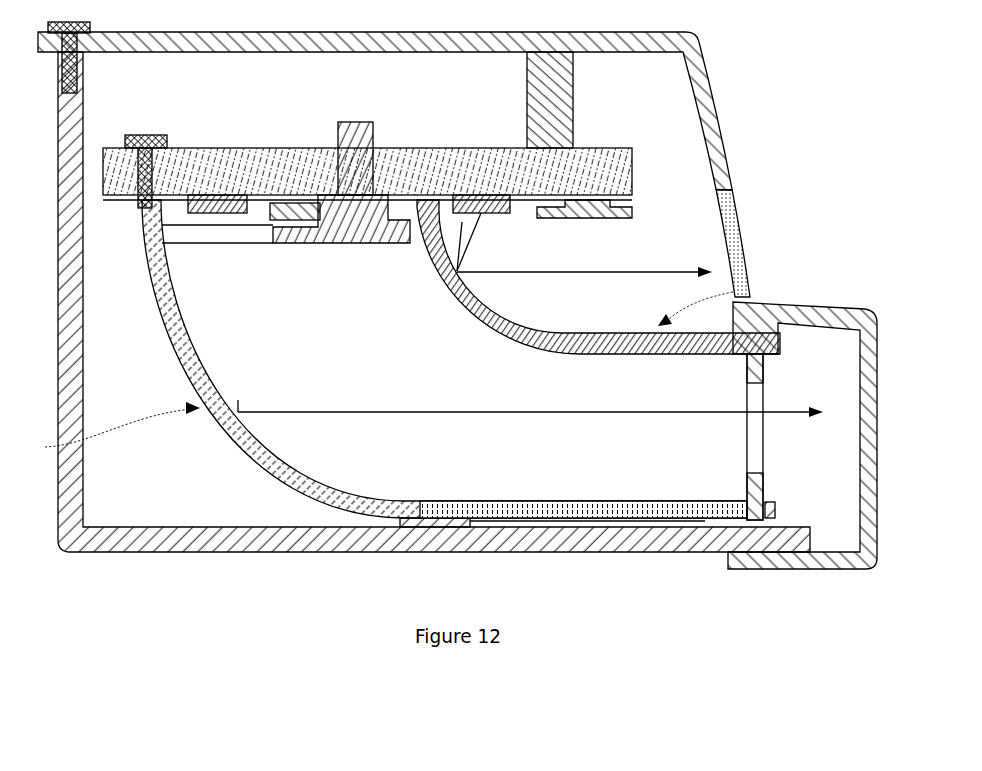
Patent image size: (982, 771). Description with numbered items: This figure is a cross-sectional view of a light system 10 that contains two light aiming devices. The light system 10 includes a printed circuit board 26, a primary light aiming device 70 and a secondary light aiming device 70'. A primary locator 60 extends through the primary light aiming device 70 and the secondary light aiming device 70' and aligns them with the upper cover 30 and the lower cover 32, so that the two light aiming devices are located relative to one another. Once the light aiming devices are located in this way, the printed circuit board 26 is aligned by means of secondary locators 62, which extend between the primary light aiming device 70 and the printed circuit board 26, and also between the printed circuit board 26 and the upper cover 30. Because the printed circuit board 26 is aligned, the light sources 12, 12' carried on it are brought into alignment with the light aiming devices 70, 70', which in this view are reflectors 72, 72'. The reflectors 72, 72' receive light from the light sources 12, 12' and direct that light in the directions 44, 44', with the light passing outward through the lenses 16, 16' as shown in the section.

The light system 10 is at (786, 128).
The lens 16 is at (424, 292).
The lens 16' is at (825, 435).
The upper cover 30 is at (141, 33).
The printed circuit board 26 is at (103, 172).
The secondary locator 62 is at (360, 130).
The light source 12 is at (481, 137).
The light source 12' is at (224, 207).
The direction 44 is at (584, 256).
The direction 44' is at (530, 398).
The primary light aiming device 70 is at (722, 297).
The secondary light aiming device 70' is at (107, 429).
The primary locator 60 is at (767, 368).
The reflector 72 is at (598, 391).
The reflector 72' is at (458, 391).
The lower cover 32 is at (202, 553).